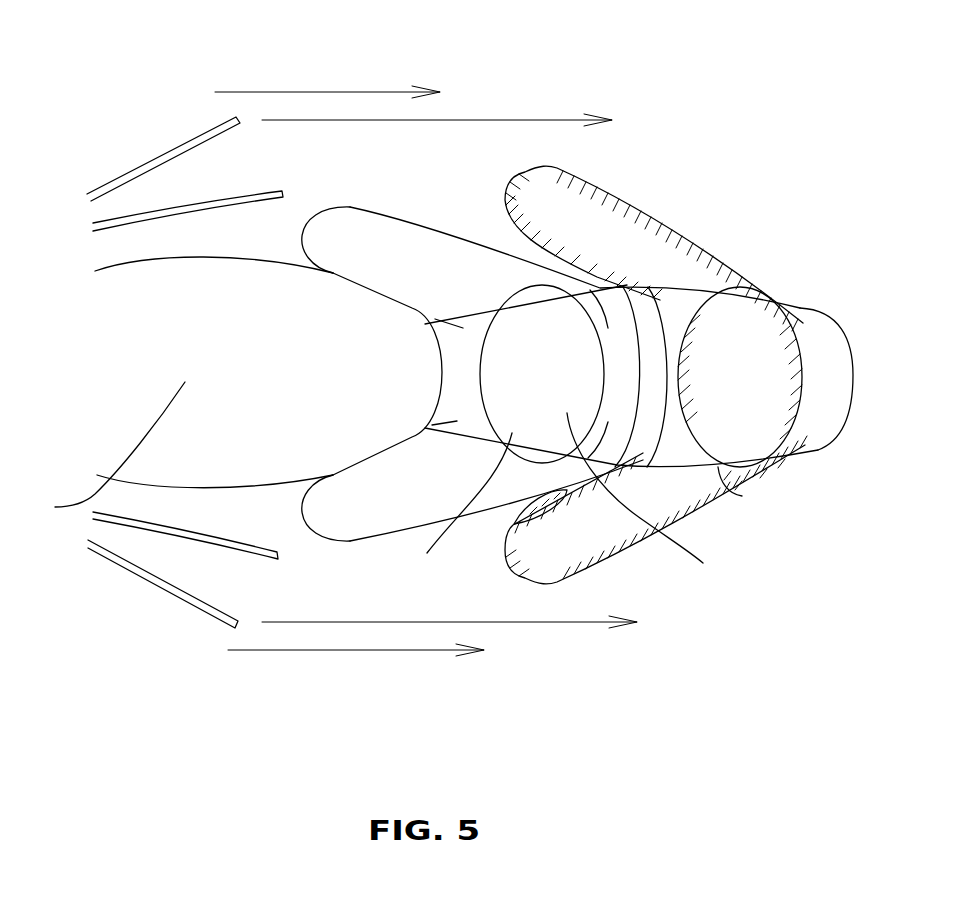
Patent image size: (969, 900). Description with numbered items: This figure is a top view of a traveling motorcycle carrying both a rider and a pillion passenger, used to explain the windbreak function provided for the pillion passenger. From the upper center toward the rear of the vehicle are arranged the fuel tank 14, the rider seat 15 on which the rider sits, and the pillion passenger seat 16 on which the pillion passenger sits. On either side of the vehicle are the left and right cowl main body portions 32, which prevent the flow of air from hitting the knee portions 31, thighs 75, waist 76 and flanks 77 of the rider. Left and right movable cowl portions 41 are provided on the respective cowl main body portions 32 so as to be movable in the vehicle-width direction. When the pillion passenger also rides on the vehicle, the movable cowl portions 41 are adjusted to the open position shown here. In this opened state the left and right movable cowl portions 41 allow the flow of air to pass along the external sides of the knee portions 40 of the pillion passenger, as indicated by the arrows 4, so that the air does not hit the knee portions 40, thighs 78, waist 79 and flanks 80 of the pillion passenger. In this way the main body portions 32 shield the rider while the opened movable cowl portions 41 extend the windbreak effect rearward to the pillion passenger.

The arrows 4 is at (508, 119).
The fuel tank 14 is at (55, 506).
The rider seat 15 is at (703, 563).
The pillion passenger seat 16 is at (808, 417).
The knee portions 31 is at (307, 233).
The cowl main body portions 32 is at (223, 207).
The knee portions 40 is at (523, 192).
The movable cowl portions 41 is at (158, 155).
The thighs 75 is at (427, 245).
The waist 76 is at (516, 523).
The flanks 77 is at (427, 553).
The thighs 78 is at (625, 212).
The waist 79 is at (767, 483).
The flanks 80 is at (722, 492).